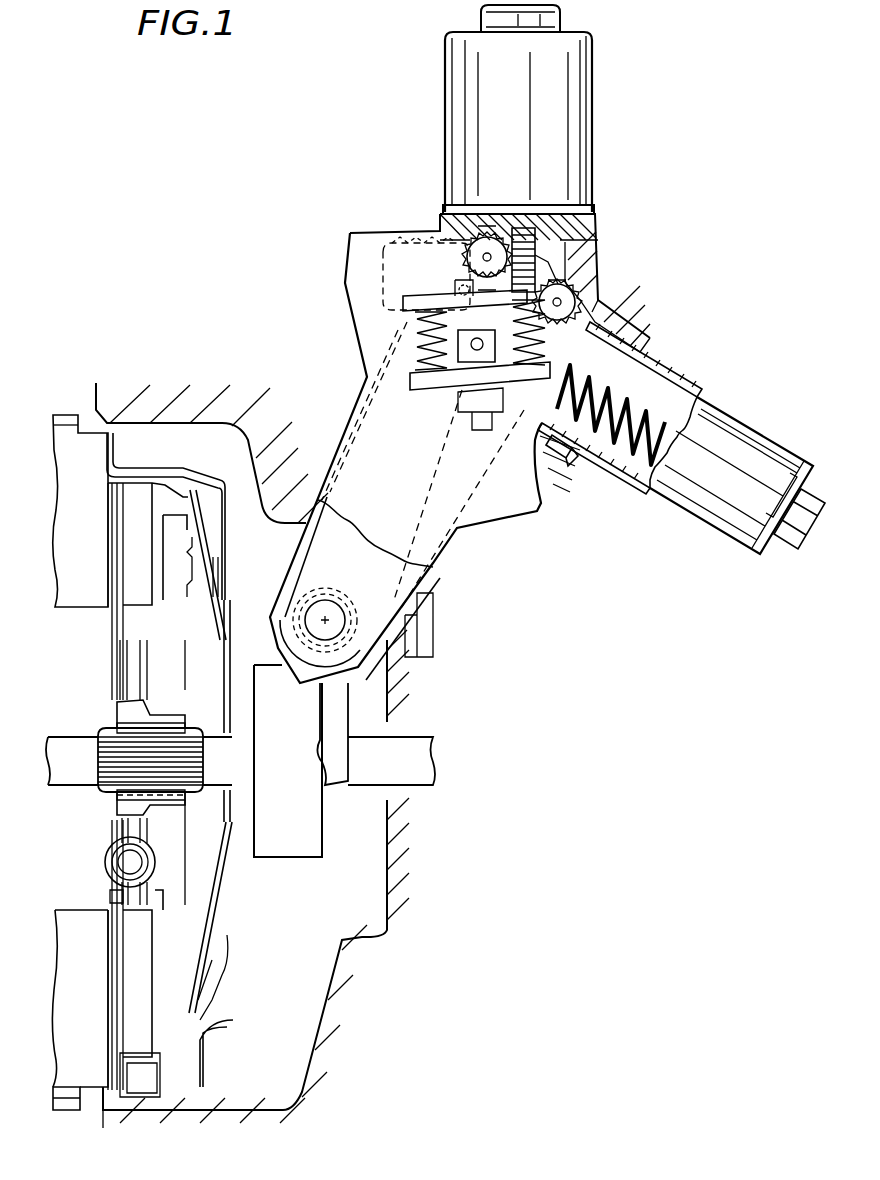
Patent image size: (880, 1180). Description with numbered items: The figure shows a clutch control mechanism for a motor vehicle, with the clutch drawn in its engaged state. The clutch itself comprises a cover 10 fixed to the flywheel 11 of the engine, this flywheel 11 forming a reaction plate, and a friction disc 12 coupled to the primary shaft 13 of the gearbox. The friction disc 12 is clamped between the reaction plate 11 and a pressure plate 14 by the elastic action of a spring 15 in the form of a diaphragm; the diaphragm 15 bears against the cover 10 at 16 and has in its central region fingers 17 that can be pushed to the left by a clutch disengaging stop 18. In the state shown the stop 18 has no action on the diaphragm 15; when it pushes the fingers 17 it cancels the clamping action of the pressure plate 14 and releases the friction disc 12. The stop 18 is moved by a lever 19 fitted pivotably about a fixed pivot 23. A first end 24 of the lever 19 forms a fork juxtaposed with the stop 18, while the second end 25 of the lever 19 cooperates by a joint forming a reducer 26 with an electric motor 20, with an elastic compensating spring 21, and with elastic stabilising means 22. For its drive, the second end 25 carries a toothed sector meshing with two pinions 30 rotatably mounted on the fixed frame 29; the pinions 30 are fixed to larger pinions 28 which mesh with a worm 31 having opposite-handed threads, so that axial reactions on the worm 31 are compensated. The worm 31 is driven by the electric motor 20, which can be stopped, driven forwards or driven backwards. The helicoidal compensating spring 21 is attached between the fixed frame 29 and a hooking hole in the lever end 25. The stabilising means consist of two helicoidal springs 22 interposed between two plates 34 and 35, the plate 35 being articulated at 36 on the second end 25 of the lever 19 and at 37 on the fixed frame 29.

The cover 10 is at (168, 462).
The flywheel 11 is at (87, 582).
The friction disc 12 is at (112, 590).
The primary shaft 13 is at (76, 745).
The pressure plate 14 is at (135, 493).
The diaphragm spring 15 is at (197, 500).
The bearing point 16 is at (207, 545).
The fingers 17 is at (222, 670).
The clutch disengaging stop 18 is at (323, 845).
The lever 19 is at (380, 577).
The electric motor 20 is at (588, 124).
The helicoidal compensating spring 21 is at (694, 396).
The helicoidal stabilising springs 22 is at (612, 365).
The fixed pivot 23 is at (315, 624).
The first end of the lever 24 is at (331, 767).
The second end of the lever 25 is at (382, 282).
The reducer 26 is at (540, 272).
The larger pinions 28 is at (487, 268).
The fixed frame 29 is at (603, 263).
The pinions 30 is at (462, 253).
The worm 31 is at (541, 256).
The plate 34 is at (405, 304).
The plate 35 is at (417, 390).
The articulation 36 is at (468, 296).
The articulation 37 is at (473, 348).